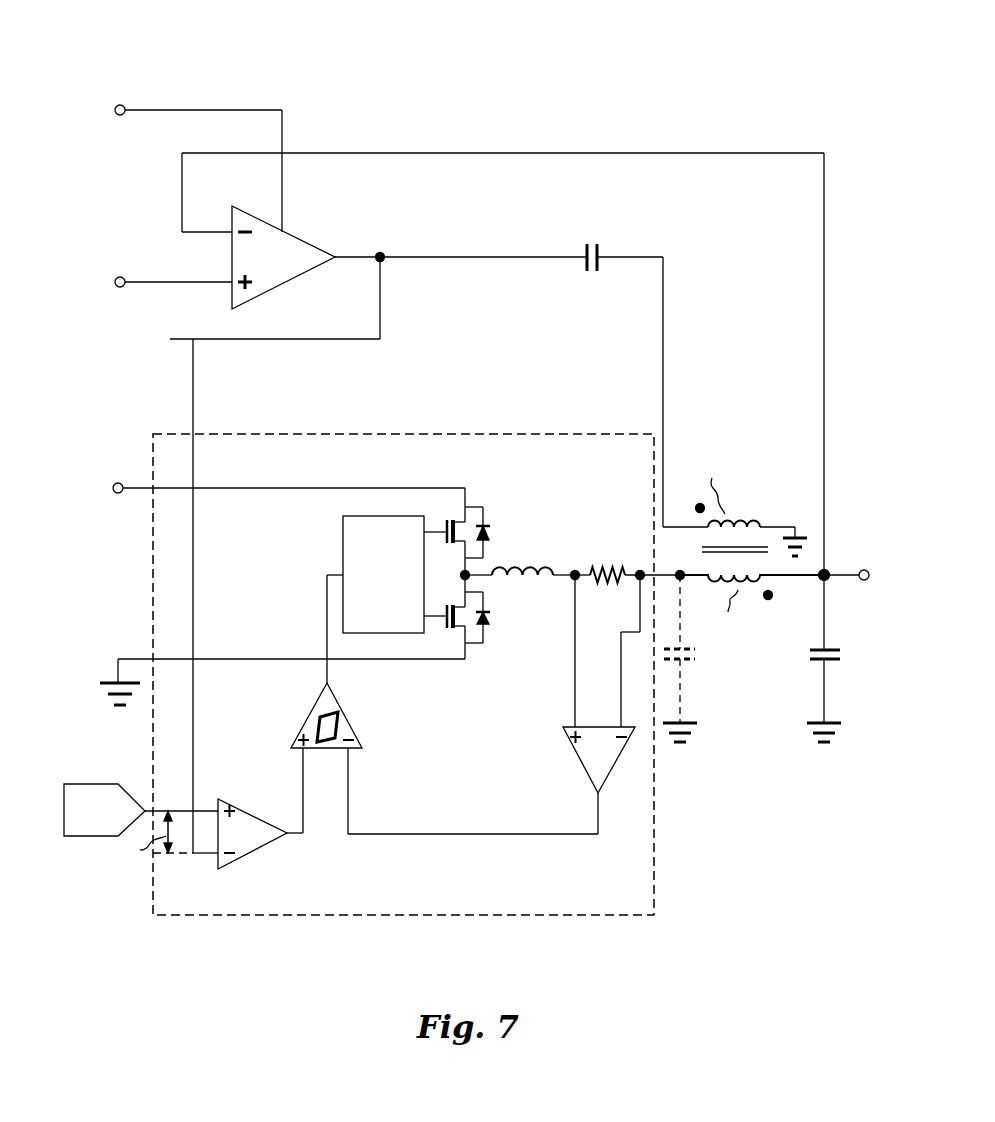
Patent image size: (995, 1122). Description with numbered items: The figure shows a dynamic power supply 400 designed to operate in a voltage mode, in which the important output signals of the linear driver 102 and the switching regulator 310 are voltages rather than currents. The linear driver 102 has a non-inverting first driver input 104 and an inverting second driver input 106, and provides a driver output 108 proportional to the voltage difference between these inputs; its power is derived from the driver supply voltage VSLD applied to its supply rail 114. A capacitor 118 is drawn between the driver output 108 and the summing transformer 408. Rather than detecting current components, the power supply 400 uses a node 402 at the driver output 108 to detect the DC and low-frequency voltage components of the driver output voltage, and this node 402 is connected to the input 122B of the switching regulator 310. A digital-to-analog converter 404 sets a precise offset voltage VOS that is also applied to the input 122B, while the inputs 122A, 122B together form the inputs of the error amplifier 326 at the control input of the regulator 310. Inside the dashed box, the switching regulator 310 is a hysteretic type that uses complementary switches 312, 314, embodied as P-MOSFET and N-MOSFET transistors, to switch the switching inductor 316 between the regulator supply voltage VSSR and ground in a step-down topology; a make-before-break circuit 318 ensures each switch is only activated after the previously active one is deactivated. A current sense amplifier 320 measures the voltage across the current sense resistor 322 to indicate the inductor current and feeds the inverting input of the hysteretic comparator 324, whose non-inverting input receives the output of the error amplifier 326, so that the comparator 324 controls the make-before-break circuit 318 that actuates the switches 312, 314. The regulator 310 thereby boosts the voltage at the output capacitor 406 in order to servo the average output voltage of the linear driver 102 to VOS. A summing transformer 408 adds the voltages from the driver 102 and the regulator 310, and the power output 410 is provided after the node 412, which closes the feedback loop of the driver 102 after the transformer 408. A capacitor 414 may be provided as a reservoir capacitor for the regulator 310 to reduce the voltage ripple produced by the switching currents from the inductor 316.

The dynamic power supply 400 is at (560, 63).
The linear driver 102 is at (283, 257).
The first driver input 104 is at (118, 288).
The second driver input 106 is at (210, 232).
The driver output 108 is at (355, 253).
The supply rail 114 is at (282, 186).
The coupling capacitor 118 is at (597, 250).
The node 402 is at (384, 262).
The switching regulator 310 is at (301, 918).
The complementary switch 312 is at (456, 521).
The complementary switch 314 is at (459, 628).
The switching inductor 316 is at (522, 562).
The make-before-break circuit 318 is at (343, 545).
The current sense amplifier 320 is at (578, 762).
The current sense resistor 322 is at (601, 562).
The hysteretic comparator 324 is at (310, 712).
The error amplifier 326 is at (256, 816).
The input 122A is at (210, 857).
The input 122B is at (215, 807).
The digital-to-analog converter 404 is at (80, 838).
The output capacitor 406 is at (808, 665).
The summing transformer 408 is at (780, 497).
The power output 410 is at (865, 569).
The node 412 is at (829, 584).
The capacitor 414 is at (695, 663).